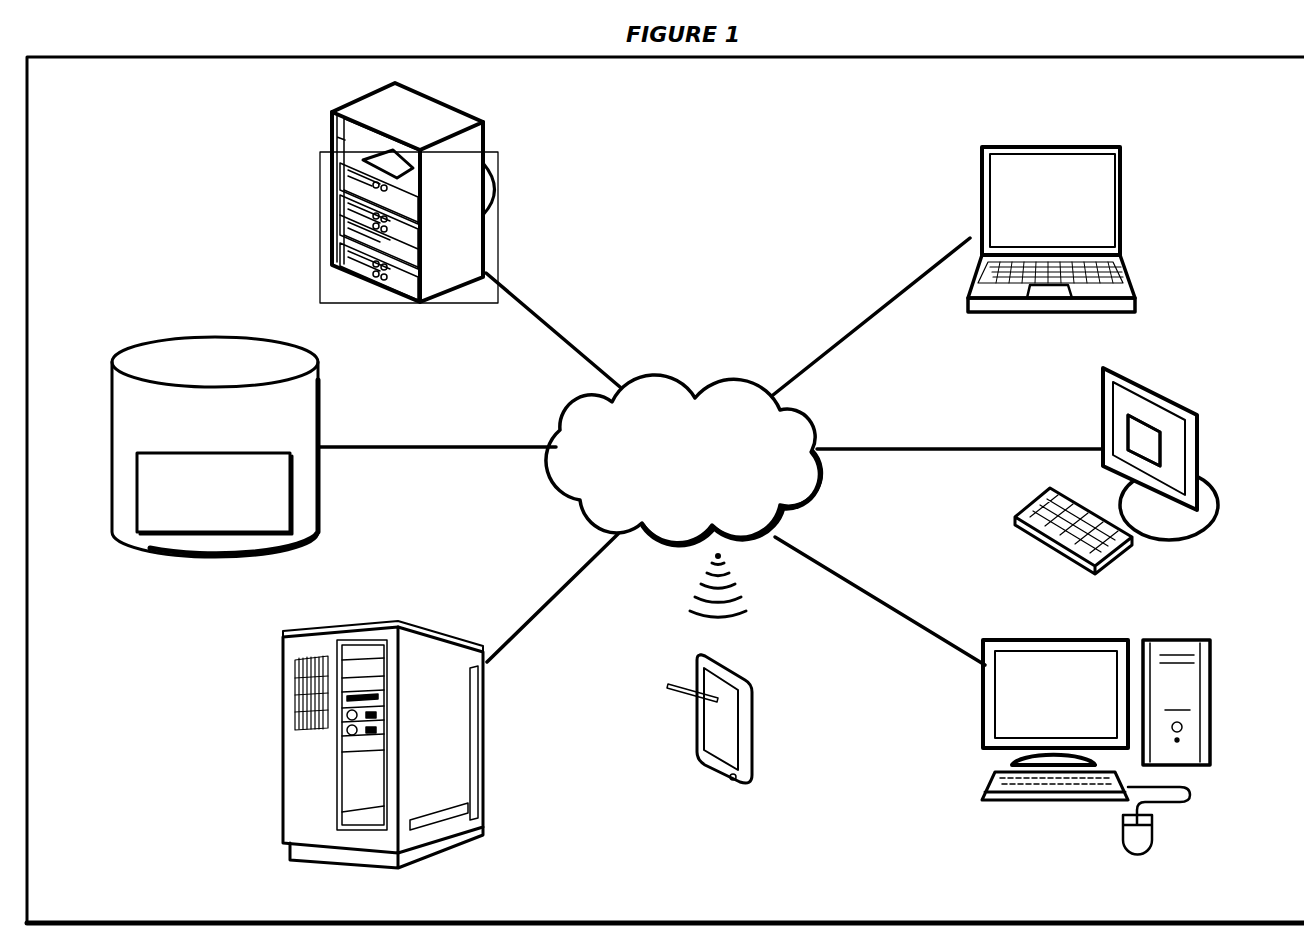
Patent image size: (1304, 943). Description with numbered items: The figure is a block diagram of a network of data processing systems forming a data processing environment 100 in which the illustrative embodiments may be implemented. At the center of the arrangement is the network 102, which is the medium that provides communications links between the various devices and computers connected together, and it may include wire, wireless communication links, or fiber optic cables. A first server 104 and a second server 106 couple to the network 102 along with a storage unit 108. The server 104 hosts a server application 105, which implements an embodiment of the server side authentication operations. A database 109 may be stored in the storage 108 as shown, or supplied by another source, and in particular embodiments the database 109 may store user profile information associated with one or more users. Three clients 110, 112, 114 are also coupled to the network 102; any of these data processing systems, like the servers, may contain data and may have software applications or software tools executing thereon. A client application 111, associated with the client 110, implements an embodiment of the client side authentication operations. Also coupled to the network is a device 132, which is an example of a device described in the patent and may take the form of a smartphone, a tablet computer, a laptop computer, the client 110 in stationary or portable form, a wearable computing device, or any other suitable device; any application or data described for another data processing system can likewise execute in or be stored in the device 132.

The data processing environment 100 is at (46, 98).
The network 102 is at (669, 484).
The server 104 is at (437, 330).
The server application 105 is at (413, 178).
The server 106 is at (429, 893).
The storage unit 108 is at (197, 440).
The database 109 is at (197, 514).
The client 110 is at (1241, 559).
The client application 111 is at (1130, 432).
The client 112 is at (1103, 703).
The client 114 is at (1101, 208).
The device 132 is at (778, 818).